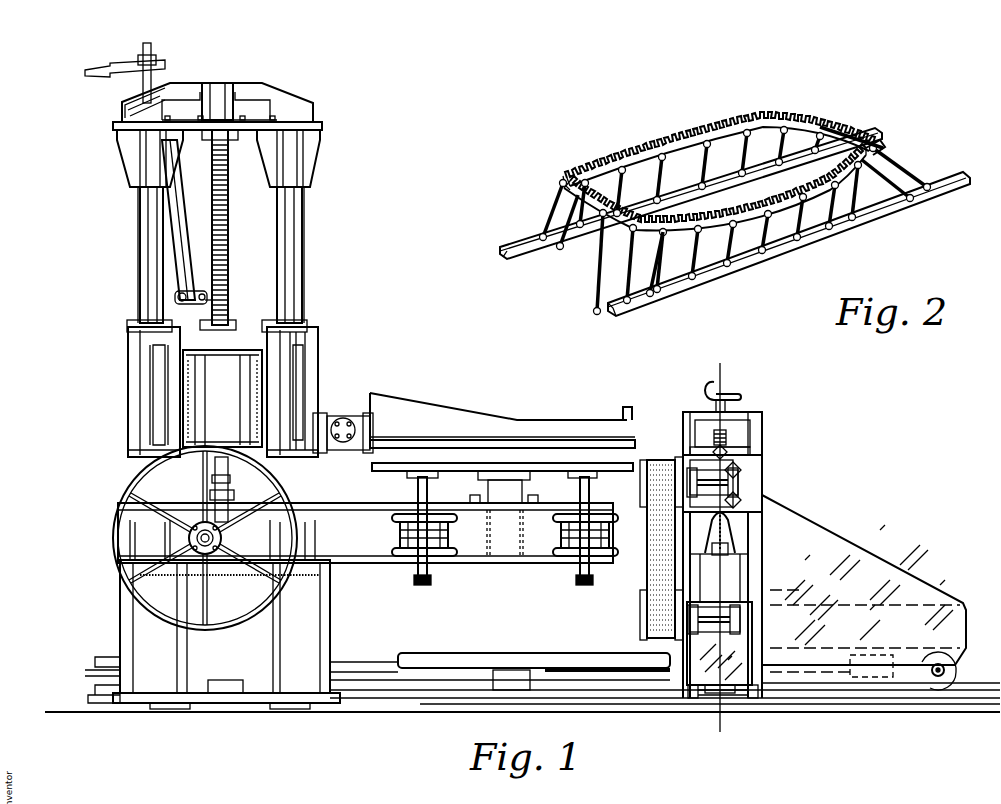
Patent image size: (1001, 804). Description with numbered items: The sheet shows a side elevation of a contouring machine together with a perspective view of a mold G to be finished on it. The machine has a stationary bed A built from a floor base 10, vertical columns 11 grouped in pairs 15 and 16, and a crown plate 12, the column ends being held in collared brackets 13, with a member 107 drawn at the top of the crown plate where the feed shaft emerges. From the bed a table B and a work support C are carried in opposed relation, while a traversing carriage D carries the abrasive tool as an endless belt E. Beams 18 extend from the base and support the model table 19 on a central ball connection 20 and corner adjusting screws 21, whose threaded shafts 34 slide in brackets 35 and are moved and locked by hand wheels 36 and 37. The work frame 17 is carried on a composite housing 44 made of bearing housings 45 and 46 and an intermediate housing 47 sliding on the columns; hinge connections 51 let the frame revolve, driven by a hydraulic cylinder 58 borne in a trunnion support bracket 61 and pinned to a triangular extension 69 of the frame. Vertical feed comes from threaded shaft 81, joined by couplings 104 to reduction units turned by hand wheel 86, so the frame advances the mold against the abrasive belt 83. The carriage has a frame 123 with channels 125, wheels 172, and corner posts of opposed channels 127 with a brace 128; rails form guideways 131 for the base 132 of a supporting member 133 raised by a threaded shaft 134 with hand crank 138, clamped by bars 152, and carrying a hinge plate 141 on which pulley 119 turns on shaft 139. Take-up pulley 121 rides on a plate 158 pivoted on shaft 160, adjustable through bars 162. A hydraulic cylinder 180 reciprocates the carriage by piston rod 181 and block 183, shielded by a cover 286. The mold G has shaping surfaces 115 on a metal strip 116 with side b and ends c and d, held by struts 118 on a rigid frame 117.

In FIG. 1, the floor base 10 is at (140, 614).
In FIG. 1, the columns 11 is at (150, 274).
In FIG. 1, the crown plate 12 is at (283, 105).
In FIG. 1, the collared brackets 13 is at (140, 165).
In FIG. 1, the pair of columns 15 is at (305, 230).
In FIG. 1, the pair of columns 16 is at (700, 592).
In FIG. 1, the frame 17 is at (425, 418).
In FIG. 1, the beams 18 is at (350, 549).
In FIG. 1, the table 19 is at (395, 470).
In FIG. 1, the ball connection 20 is at (522, 483).
In FIG. 1, the adjusting screws 21 is at (590, 492).
In FIG. 1, the threaded shafts 34 is at (431, 574).
In FIG. 1, the brackets 35 is at (430, 535).
In FIG. 1, the hand wheel 36 is at (393, 519).
In FIG. 1, the hand wheel 37 is at (393, 552).
In FIG. 1, the composite housing 44 is at (302, 346).
In FIG. 1, the bearing housing 45 is at (143, 354).
In FIG. 1, the bearing housing 46 is at (302, 362).
In FIG. 1, the intermediate housing 47 is at (228, 370).
In FIG. 1, the hinge connections 51 is at (345, 443).
In FIG. 1, the hydraulic cylinder 58 is at (175, 240).
In FIG. 1, the trunnion support bracket 61 is at (227, 301).
In FIG. 1, the triangular extension 69 is at (330, 410).
In FIG. 1, the threaded shaft 81 is at (229, 258).
In FIG. 1, the abrasive belt 83 is at (650, 567).
In FIG. 1, the hand wheel 86 is at (114, 538).
In FIG. 1, the couplings 104 is at (238, 504).
In FIG. 1, the screw nut 107 is at (233, 90).
In FIG. 2, the shaping surfaces 115 is at (577, 176).
In FIG. 2, the metal strip 116 is at (713, 143).
In FIG. 2, the rigid frame 117 is at (670, 300).
In FIG. 2, the struts 118 is at (880, 162).
In FIG. 1, the pulley 119 is at (644, 459).
In FIG. 1, the take-up pulley 121 is at (645, 634).
In FIG. 1, the carriage frame 123 is at (880, 577).
In FIG. 1, the channels 125 is at (966, 623).
In FIG. 1, the channels 127 is at (755, 628).
In FIG. 1, the structural brace 128 is at (690, 418).
In FIG. 1, the guideways 131 is at (757, 551).
In FIG. 1, the base 132 is at (740, 534).
In FIG. 1, the supporting member 133 is at (755, 462).
In FIG. 1, the threaded shaft 134 is at (735, 438).
In FIG. 1, the hand crank 138 is at (740, 398).
In FIG. 1, the shaft 139 is at (712, 477).
In FIG. 1, the hinge plate 141 is at (752, 479).
In FIG. 1, the bars 152 is at (758, 452).
In FIG. 1, the plate 158 is at (736, 670).
In FIG. 1, the shaft 160 is at (729, 697).
In FIG. 1, the bars 162 is at (689, 696).
In FIG. 1, the wheels 172 is at (957, 671).
In FIG. 1, the hydraulic cylinder 180 is at (368, 666).
In FIG. 1, the piston rod 181 is at (587, 669).
In FIG. 1, the block 183 is at (867, 676).
In FIG. 1, the cover 286 is at (470, 660).
In FIG. 1, the stationary bed A is at (320, 311).
In FIG. 1, the table B is at (452, 466).
In FIG. 1, the support for the work C is at (524, 434).
In FIG. 1, the traversing carriage D is at (793, 509).
In FIG. 1, the endless belt E is at (648, 532).
In FIG. 2, the mold G is at (620, 162).
In FIG. 2, the side portion b is at (660, 156).
In FIG. 2, the end portion c is at (630, 219).
In FIG. 2, the end portion d is at (823, 126).